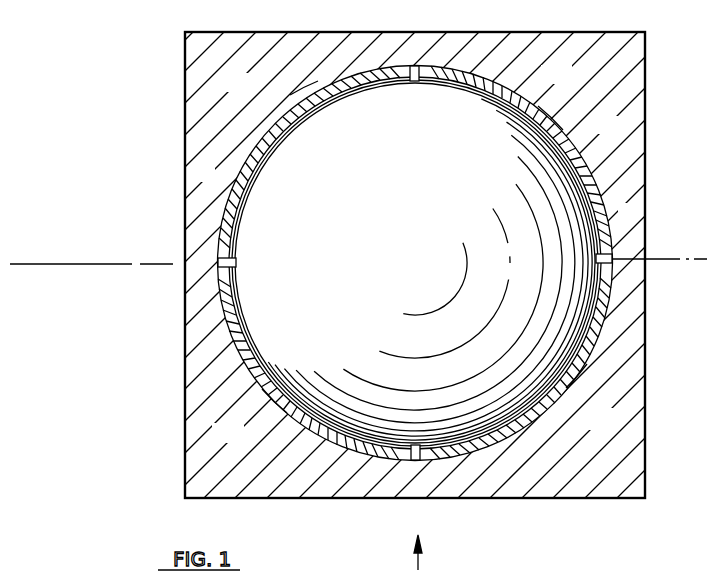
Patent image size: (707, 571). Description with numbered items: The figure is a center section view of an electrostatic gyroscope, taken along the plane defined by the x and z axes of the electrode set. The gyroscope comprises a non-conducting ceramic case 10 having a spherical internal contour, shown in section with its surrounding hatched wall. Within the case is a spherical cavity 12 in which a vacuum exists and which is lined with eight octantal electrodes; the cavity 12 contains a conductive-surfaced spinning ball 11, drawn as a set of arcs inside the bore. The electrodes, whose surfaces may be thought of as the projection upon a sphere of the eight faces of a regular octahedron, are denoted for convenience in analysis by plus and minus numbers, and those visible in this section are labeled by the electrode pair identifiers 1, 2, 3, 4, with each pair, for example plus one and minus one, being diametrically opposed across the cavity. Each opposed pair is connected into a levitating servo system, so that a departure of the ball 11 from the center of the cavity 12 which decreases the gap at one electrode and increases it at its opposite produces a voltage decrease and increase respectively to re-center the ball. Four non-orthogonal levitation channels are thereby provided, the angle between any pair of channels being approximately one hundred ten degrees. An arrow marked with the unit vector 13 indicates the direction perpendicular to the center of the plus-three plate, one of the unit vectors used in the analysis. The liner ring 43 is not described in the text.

The non-conducting ceramic case 10 is at (600, 87).
The spherical cavity 12 is at (248, 163).
The bearing liner ring 43 is at (577, 160).
The conductive-surfaced spinning ball 11 is at (553, 210).
The electrode pair +1, - 1 is at (577, 377).
The electrode pair +2, - 2 is at (303, 102).
The electrode pair +3, - 3 is at (550, 120).
The electrode pair +4, - 4 is at (275, 400).
The unit vector 1-bar sub 3 13 is at (449, 533).